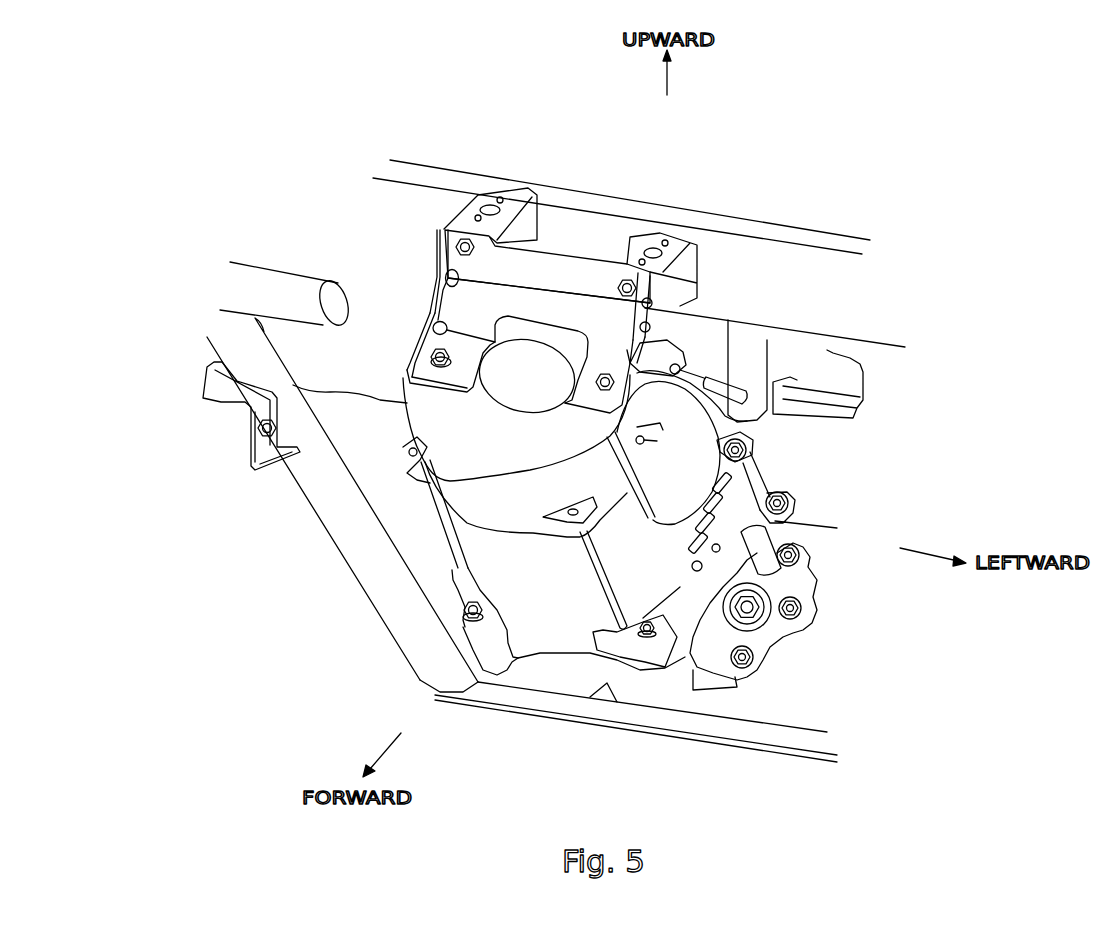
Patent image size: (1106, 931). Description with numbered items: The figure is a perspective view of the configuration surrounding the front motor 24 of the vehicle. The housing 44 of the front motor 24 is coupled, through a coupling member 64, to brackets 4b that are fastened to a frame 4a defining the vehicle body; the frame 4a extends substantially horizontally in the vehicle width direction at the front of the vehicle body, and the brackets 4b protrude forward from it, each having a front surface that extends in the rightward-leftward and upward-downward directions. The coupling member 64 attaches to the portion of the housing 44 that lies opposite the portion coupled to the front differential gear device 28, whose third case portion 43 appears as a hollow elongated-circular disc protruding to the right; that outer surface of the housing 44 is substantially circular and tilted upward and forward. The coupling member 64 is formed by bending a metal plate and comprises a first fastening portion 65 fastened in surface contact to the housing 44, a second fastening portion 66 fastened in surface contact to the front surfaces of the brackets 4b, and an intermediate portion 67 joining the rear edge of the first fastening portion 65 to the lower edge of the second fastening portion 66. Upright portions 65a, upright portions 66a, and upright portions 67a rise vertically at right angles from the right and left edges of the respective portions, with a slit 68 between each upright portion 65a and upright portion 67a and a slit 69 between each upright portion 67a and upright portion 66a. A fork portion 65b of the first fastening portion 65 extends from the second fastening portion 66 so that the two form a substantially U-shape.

The frame 4a is at (818, 262).
The brackets 4b is at (516, 195).
The front motor 24 is at (636, 605).
The front differential gear device 28 is at (710, 663).
The third case portion 43 is at (771, 660).
The housing 44 is at (556, 637).
The coupling member 64 is at (572, 268).
The first fastening portion 65 is at (590, 465).
The upright portions 65a is at (415, 347).
The fork portion 65b is at (453, 378).
The second fastening portion 66 is at (541, 268).
The upright portions 66a is at (434, 237).
The intermediate portion 67 is at (542, 303).
The upright portions 67a is at (441, 296).
The slit 68 is at (432, 315).
The slit 69 is at (444, 270).